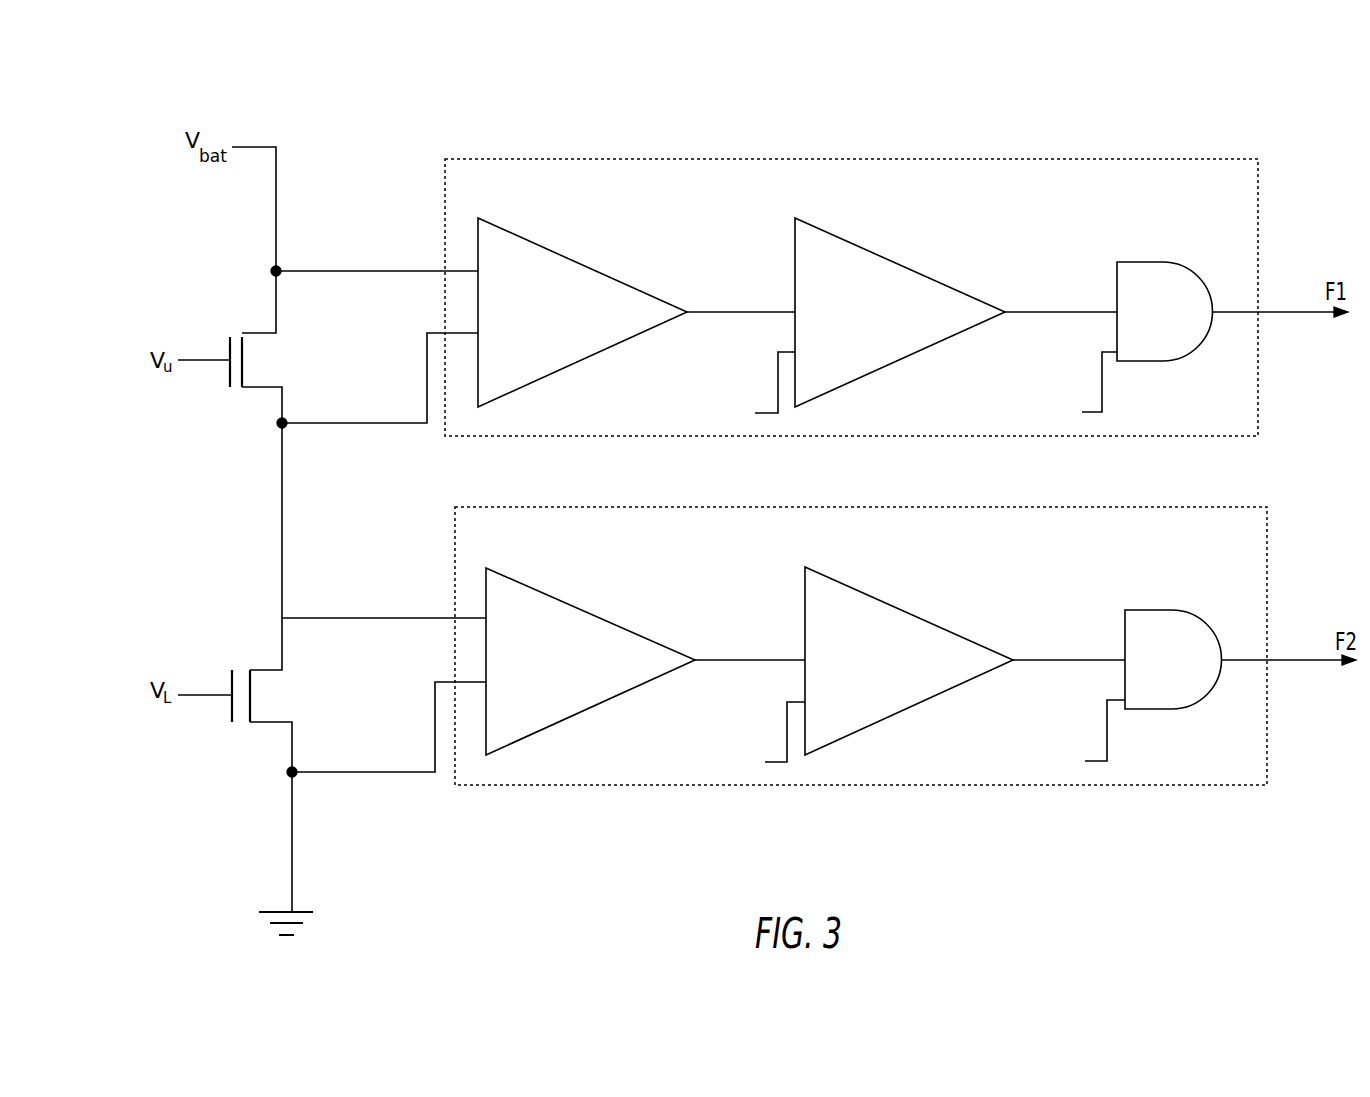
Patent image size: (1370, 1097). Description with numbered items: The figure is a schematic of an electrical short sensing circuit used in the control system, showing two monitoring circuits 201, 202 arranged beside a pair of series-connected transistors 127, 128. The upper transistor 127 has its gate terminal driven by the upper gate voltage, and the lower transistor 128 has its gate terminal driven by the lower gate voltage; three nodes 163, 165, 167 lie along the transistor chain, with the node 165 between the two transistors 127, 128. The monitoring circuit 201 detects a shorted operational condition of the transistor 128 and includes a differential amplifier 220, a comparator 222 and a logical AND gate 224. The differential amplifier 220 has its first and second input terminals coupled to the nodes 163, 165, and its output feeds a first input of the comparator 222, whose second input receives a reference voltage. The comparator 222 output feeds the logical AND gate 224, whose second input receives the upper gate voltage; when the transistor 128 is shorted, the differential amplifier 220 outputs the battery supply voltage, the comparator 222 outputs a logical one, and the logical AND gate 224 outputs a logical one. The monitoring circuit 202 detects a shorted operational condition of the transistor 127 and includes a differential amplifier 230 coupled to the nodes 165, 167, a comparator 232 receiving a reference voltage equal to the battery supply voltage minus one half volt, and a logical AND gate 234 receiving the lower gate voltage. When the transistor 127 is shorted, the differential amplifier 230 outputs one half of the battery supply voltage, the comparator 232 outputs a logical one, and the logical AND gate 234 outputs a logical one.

The transistor 127 is at (252, 332).
The transistor 128 is at (262, 672).
The node 163 is at (279, 270).
The node 165 is at (284, 426).
The node 167 is at (295, 775).
The monitoring circuit 201 is at (1122, 158).
The monitoring circuit 202 is at (1130, 507).
The differential amplifier 220 is at (560, 258).
The comparator 222 is at (898, 262).
The logical AND gate 224 is at (1143, 262).
The differential amplifier 230 is at (568, 604).
The comparator 232 is at (905, 610).
The logical AND gate 234 is at (1150, 610).